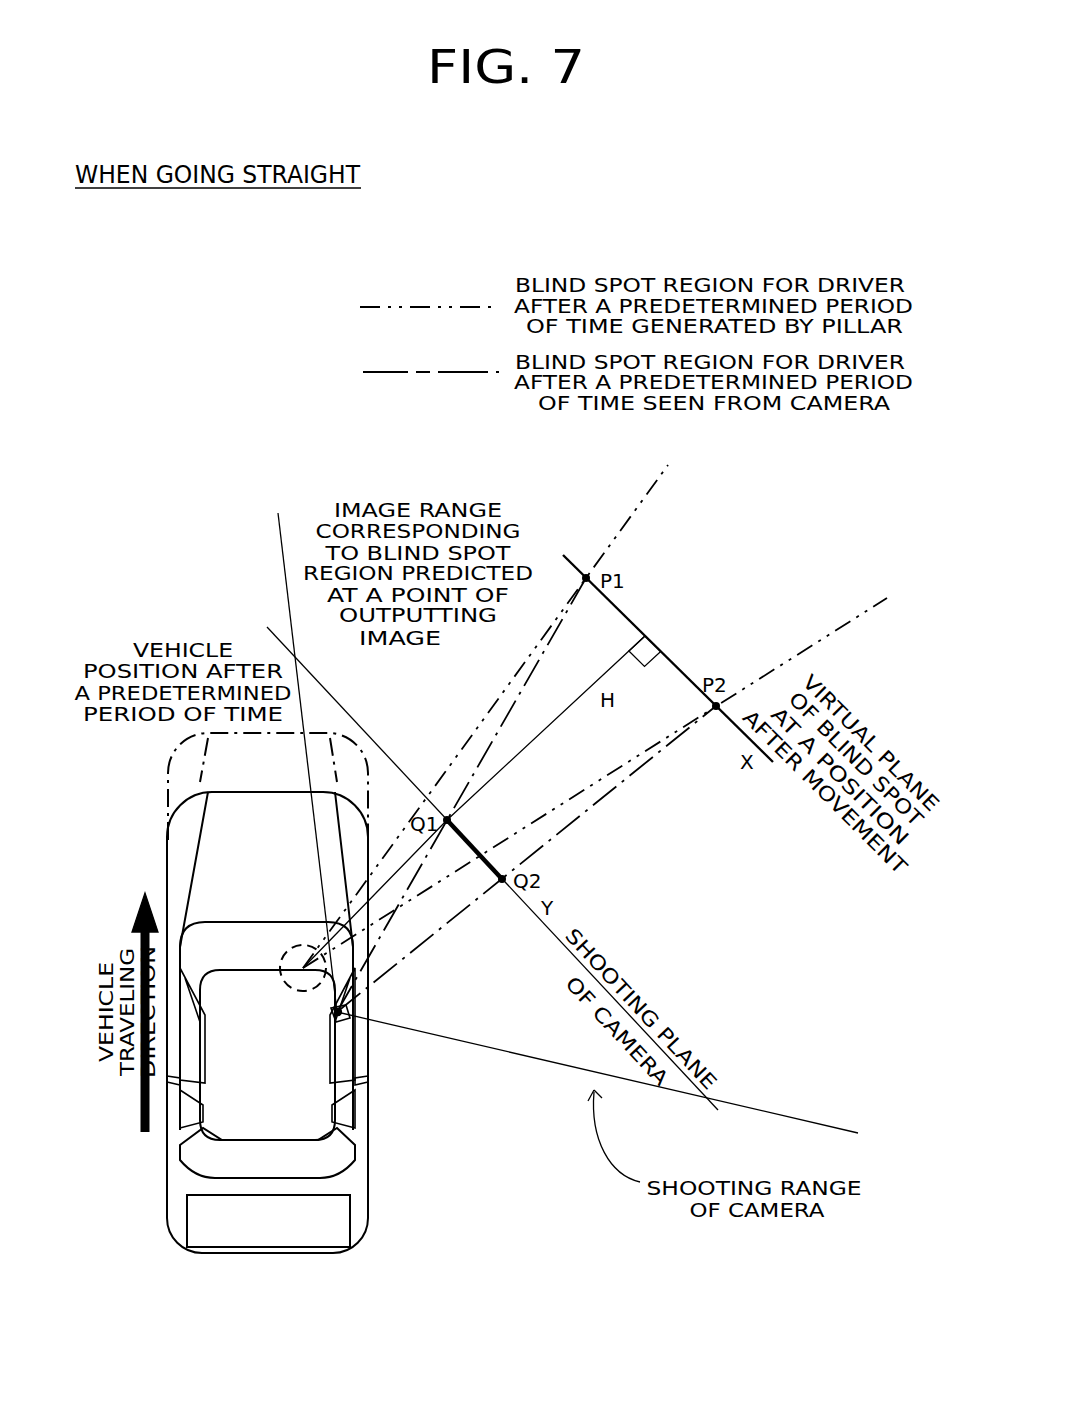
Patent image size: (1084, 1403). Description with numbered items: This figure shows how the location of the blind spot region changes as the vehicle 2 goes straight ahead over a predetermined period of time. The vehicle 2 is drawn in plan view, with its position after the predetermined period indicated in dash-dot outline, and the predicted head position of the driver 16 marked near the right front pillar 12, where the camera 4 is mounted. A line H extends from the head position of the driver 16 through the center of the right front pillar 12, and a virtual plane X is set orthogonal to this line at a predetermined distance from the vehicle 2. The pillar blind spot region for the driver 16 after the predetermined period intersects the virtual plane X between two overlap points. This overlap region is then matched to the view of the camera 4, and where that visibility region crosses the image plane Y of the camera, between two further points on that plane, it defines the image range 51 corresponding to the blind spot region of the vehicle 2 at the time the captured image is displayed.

The vehicle 2 is at (279, 1107).
The camera 4 is at (341, 1011).
The right front pillar 12 is at (348, 1020).
The driver 16 is at (283, 958).
The image range 51 is at (450, 815).